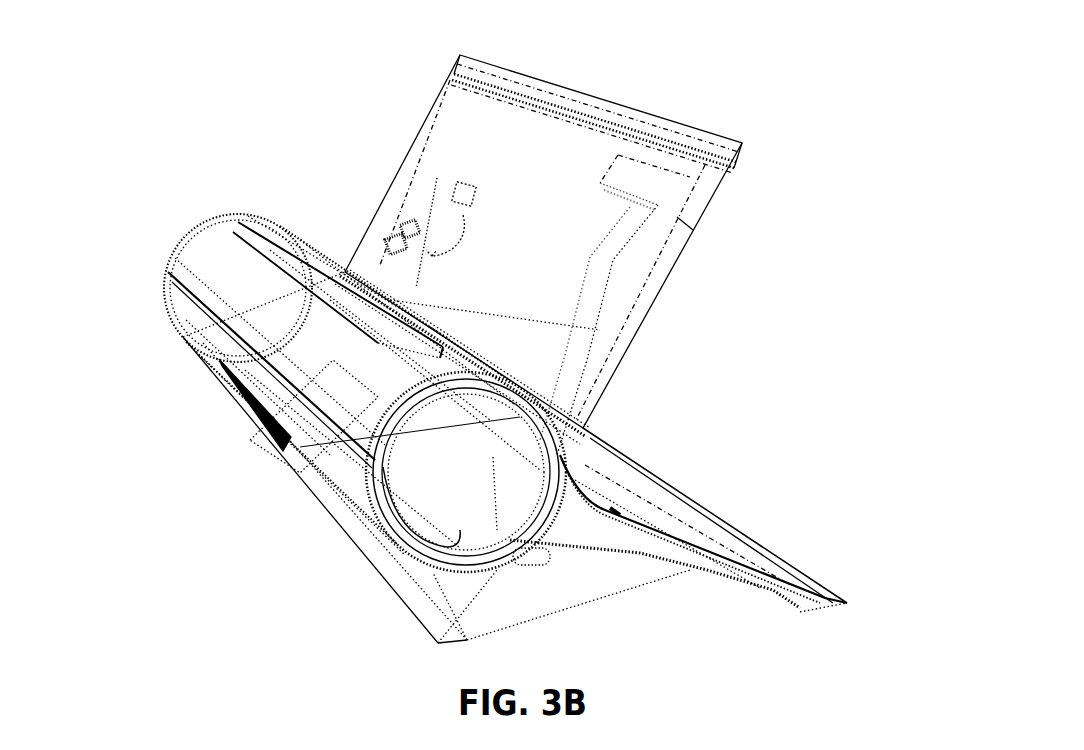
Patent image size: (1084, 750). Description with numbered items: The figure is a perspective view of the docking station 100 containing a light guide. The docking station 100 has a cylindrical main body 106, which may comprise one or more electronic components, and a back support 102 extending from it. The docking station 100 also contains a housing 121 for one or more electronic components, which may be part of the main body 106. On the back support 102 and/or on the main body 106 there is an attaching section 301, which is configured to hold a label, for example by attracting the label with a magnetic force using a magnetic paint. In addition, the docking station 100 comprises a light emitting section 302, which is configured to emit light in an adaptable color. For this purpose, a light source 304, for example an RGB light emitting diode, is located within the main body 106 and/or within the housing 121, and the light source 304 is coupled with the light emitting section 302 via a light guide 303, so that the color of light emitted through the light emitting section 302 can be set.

The docking station 100 is at (776, 76).
The back support 102 is at (427, 137).
The main body 106 is at (190, 337).
The housing 121 is at (563, 572).
The attaching section 301 is at (680, 192).
The light emitting section 302 is at (665, 198).
The light guide 303 is at (616, 269).
The light source 304 is at (483, 535).